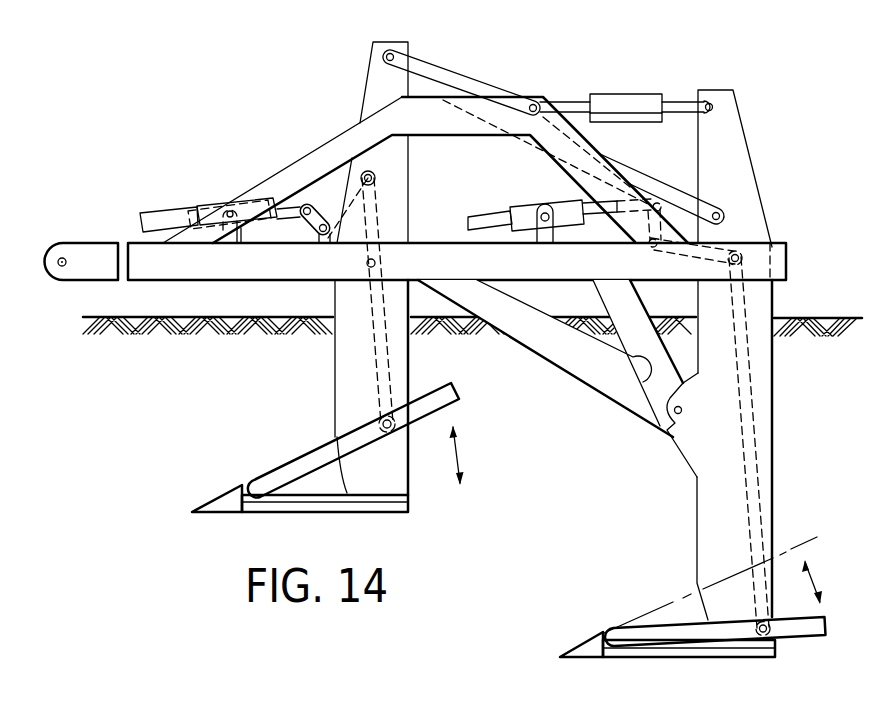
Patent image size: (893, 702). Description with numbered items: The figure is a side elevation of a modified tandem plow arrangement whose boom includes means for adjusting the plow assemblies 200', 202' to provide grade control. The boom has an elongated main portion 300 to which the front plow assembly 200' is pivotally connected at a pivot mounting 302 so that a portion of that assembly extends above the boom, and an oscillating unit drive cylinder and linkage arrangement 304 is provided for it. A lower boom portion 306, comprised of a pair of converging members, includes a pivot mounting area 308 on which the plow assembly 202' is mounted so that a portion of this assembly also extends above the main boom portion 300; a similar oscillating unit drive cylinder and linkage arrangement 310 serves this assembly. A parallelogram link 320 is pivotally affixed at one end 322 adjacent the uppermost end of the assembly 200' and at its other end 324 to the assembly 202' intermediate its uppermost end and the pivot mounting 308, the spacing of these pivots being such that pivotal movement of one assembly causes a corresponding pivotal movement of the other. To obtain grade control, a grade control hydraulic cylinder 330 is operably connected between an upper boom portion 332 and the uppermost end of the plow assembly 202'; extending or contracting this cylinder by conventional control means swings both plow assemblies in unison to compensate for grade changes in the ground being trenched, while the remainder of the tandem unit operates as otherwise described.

The elongated main boom portion 300 is at (435, 258).
The pivot mounting 302 is at (367, 263).
The oscillating unit drive cylinder and linkage arrangement 304 is at (292, 190).
The lower boom portion 306 is at (630, 358).
The pivot mounting area 308 is at (675, 415).
The oscillating unit drive cylinder and linkage arrangement 310 is at (530, 210).
The parallelogram link 320 is at (686, 147).
The link end pivot 322 is at (408, 55).
The link end pivot 324 is at (719, 212).
The grade control hydraulic cylinder 330 is at (613, 102).
The upper boom portion 332 is at (517, 103).
The front plow assembly 200' is at (328, 341).
The rear plow assembly 202' is at (706, 373).